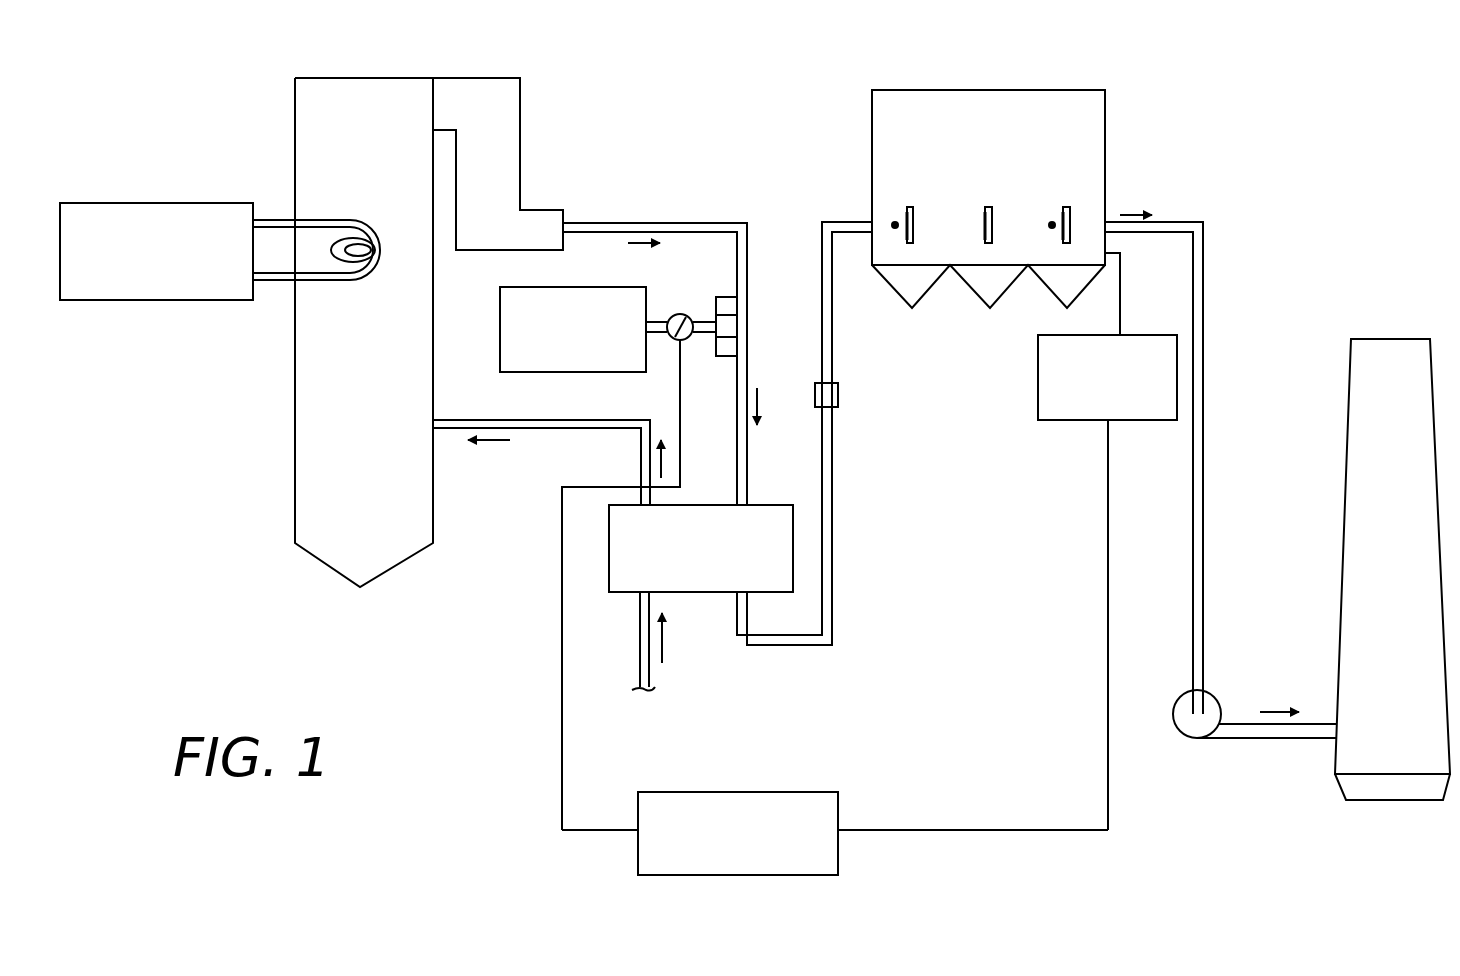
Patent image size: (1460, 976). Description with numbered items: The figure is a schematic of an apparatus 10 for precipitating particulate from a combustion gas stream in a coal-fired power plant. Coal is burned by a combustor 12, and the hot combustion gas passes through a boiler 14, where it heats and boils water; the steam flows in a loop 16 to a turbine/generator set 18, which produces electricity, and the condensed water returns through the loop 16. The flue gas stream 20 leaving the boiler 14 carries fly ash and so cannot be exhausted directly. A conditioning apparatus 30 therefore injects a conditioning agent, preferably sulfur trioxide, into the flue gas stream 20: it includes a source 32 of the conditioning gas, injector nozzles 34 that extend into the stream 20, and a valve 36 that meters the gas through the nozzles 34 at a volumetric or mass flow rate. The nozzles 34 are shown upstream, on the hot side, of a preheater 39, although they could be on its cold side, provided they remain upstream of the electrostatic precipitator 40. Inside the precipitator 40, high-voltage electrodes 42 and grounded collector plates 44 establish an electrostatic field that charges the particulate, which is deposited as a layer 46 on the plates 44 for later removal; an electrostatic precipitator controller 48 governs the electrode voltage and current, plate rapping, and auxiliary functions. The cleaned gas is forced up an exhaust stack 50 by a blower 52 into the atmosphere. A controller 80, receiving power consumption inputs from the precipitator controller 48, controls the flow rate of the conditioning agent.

The apparatus for precipitating particulate 10 is at (620, 78).
The combustor 12 is at (293, 462).
The boiler 14 is at (295, 93).
The loop 16 is at (353, 280).
The turbine/generator set 18 is at (203, 300).
The flue gas stream 20 is at (733, 223).
The conditioning apparatus 30 is at (582, 268).
The source of conditioning gas 32 is at (500, 325).
The injector nozzles 34 is at (722, 297).
The valve 36 is at (679, 314).
The preheater 39 is at (700, 592).
The electrostatic precipitator 40 is at (1105, 133).
The electrodes 42 is at (975, 225).
The collector plates 44 is at (912, 207).
The layer 46 is at (905, 210).
The electrostatic precipitator controller 48 is at (1038, 365).
The exhaust stack 50 is at (1343, 545).
The blower 52 is at (1218, 700).
The controller 80 is at (823, 792).